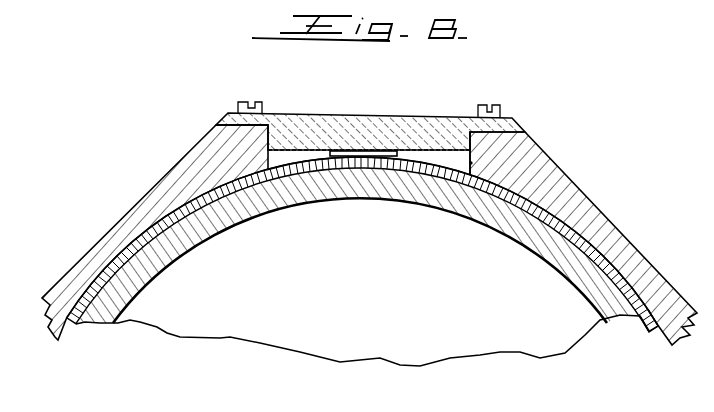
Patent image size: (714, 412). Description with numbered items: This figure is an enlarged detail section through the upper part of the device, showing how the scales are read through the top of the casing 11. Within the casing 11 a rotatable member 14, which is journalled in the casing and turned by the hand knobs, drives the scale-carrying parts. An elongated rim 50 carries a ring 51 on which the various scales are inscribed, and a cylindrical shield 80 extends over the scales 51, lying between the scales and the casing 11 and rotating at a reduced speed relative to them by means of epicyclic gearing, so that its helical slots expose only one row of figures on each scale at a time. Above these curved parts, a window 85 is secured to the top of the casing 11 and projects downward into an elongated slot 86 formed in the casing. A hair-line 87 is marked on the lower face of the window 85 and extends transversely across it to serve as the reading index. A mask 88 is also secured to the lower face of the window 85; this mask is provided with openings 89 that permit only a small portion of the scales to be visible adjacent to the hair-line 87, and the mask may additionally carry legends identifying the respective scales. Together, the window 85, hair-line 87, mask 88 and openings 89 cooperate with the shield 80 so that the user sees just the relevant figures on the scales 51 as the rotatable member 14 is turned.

The casing 11 is at (583, 199).
The rotatable member 14 is at (452, 353).
The elongated rim 50 is at (541, 250).
The ring 51 is at (621, 242).
The cylindrical shield 80 is at (648, 320).
The window 85 is at (405, 118).
The elongated slot 86 is at (471, 163).
The hair-line 87 is at (355, 116).
The mask 88 is at (307, 116).
The openings 89 is at (333, 156).